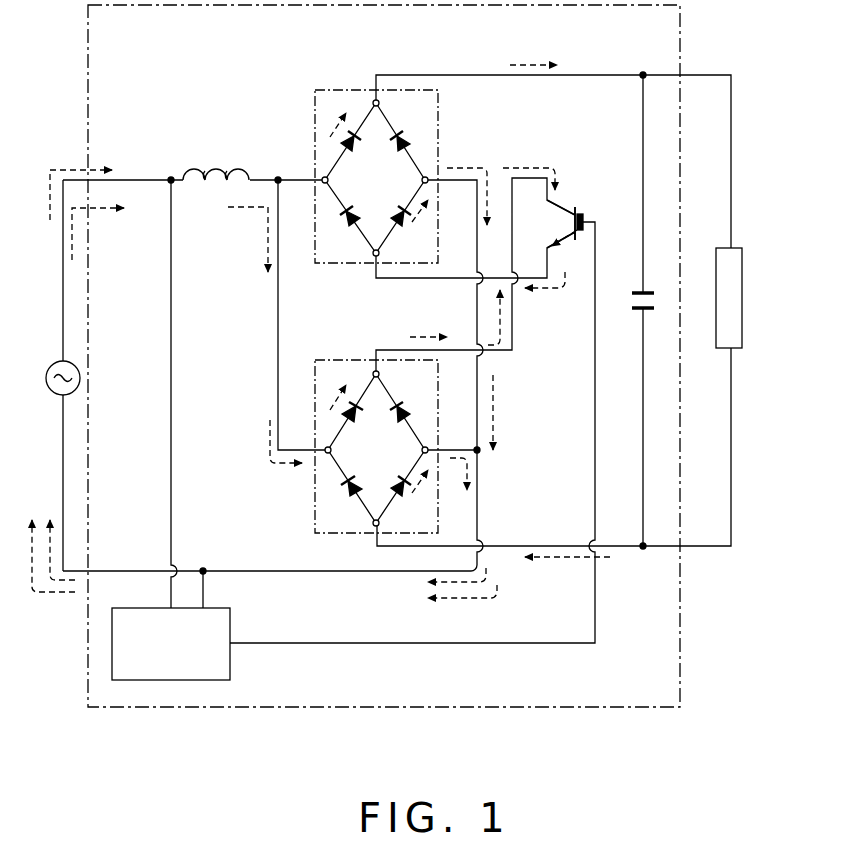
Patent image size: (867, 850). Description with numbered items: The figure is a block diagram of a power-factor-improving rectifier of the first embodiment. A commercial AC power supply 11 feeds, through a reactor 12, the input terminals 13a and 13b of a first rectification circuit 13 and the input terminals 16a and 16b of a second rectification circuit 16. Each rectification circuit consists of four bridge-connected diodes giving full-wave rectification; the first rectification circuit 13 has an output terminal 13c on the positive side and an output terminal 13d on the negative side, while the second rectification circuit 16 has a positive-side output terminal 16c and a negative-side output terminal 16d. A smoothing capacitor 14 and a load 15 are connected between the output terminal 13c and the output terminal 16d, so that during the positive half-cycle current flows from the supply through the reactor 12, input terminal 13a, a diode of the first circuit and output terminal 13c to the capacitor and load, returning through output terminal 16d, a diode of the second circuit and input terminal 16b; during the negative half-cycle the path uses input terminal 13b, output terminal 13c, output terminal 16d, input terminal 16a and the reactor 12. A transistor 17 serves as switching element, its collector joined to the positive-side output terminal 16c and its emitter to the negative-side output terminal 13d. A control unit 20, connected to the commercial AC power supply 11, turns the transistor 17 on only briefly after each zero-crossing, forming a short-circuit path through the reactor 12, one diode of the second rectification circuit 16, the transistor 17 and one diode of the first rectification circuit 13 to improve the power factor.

The commercial AC power supply 11 is at (50, 365).
The reactor 12 is at (212, 175).
The first rectification circuit 13 is at (330, 88).
The input terminal 13a is at (324, 178).
The input terminal 13b is at (427, 178).
The output terminal on the positive side 13c is at (378, 101).
The output terminal on the negative side 13d is at (375, 255).
The smoothing capacitor 14 is at (640, 292).
The load 15 is at (735, 247).
The second rectification circuit 16 is at (333, 358).
The input terminal 16a is at (327, 452).
The input terminal 16b is at (427, 448).
The output terminal on the positive side 16c is at (377, 372).
The output terminal on the negative side 16d is at (375, 525).
The transistor 17 is at (560, 205).
The control unit 20 is at (232, 628).